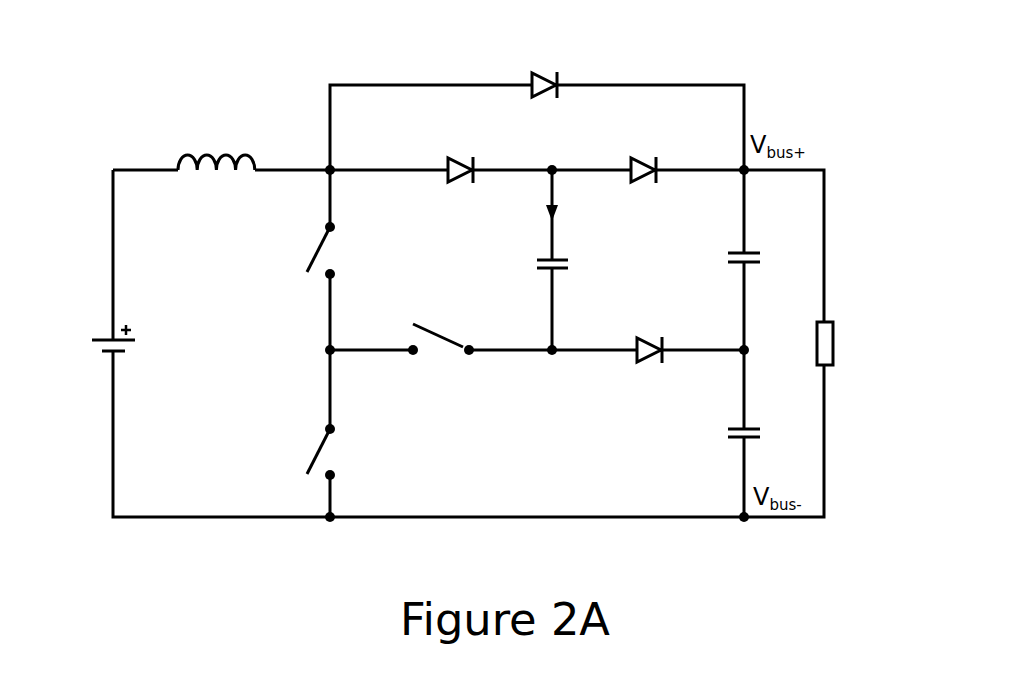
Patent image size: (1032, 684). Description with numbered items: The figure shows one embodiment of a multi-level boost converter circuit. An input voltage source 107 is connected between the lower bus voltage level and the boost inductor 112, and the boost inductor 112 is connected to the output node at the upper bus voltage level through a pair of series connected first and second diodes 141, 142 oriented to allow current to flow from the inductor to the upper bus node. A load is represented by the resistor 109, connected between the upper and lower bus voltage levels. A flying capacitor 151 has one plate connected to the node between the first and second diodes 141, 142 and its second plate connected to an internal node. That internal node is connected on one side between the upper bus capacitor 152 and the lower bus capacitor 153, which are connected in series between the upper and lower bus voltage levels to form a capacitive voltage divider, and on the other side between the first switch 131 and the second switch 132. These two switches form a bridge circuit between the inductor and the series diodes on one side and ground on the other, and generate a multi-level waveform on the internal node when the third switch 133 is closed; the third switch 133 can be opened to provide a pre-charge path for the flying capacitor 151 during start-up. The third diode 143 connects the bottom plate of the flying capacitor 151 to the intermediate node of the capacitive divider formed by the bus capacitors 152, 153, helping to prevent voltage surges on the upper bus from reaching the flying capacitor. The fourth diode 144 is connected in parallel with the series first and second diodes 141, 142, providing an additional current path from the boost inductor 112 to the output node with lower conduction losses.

The input voltage source Vin 107 is at (73, 330).
The load R 109 is at (846, 355).
The boost inductor L 112 is at (215, 189).
The switch T1 131 is at (349, 255).
The switch T2 132 is at (354, 457).
The switch S 133 is at (447, 321).
The diode D1 141 is at (436, 160).
The diode D2 142 is at (622, 160).
The diode D3 143 is at (627, 358).
The diode D4 144 is at (519, 80).
The flying capacitor Cfly 151 is at (529, 262).
The capacitor Cbus+ 152 is at (766, 258).
The capacitor Cbus- 153 is at (735, 424).